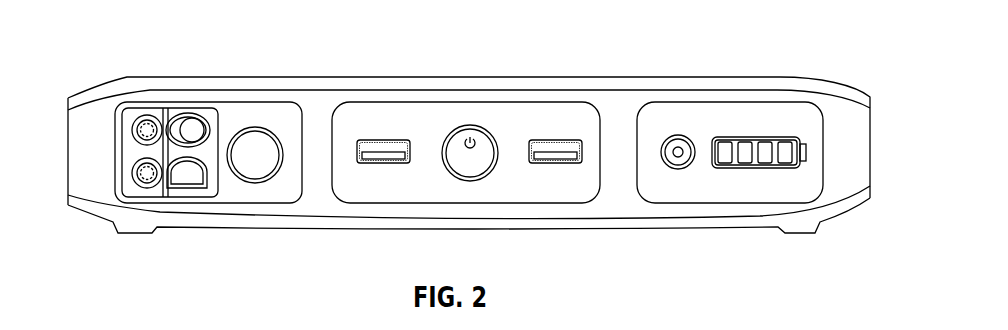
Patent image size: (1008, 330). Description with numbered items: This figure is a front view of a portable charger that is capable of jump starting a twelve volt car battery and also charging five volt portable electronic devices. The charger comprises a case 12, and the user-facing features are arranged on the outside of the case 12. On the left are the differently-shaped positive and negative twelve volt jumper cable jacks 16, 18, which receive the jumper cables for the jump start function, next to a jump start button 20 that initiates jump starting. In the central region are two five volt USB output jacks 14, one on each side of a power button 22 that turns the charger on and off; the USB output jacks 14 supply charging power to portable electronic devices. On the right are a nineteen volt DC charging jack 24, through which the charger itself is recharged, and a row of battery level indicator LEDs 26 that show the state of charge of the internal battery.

The case 12 is at (93, 85).
The 5 V USB output jack 14 is at (383, 140).
The positive 12 V jumper cable jack 16 is at (147, 115).
The negative 12 V jumper cable jack 18 is at (137, 190).
The jump start button 20 is at (255, 126).
The power button 22 is at (471, 125).
The 19 V DC charging jack 24 is at (673, 135).
The battery level indicator LEDs 26 is at (757, 137).